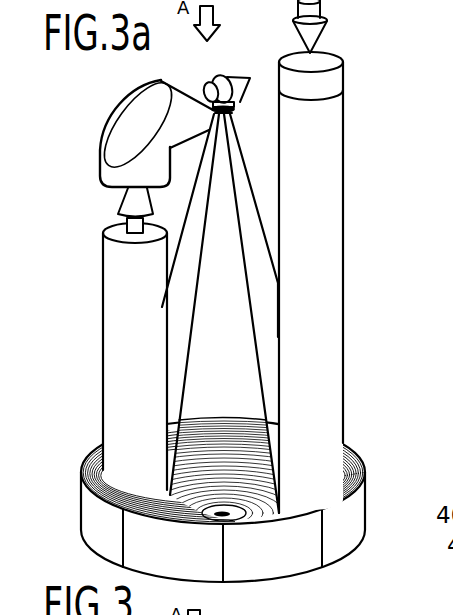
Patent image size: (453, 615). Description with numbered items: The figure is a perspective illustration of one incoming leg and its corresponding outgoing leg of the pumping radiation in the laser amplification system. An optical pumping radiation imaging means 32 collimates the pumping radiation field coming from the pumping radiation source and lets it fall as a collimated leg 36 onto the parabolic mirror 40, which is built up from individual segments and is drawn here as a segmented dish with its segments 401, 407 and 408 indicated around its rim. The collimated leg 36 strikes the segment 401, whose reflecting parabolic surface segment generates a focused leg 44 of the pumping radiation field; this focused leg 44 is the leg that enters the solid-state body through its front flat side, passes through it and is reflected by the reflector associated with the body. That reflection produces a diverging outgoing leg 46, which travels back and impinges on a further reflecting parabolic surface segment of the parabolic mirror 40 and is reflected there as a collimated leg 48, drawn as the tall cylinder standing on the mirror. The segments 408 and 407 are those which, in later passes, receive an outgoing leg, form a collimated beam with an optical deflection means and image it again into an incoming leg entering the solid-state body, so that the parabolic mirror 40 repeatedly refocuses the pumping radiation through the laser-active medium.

The optical pumping radiation imaging means 32 is at (333, 81).
The collimated leg 36 is at (333, 203).
The collimated leg 48 is at (118, 268).
The diverging outgoing leg 46 is at (196, 264).
The focused leg 44 is at (261, 288).
The parabolic mirror 40 is at (146, 576).
The segment of the parabolic mirror 407 is at (204, 574).
The segment of the parabolic mirror 408 is at (281, 562).
The segment of the parabolic mirror 401 is at (334, 551).